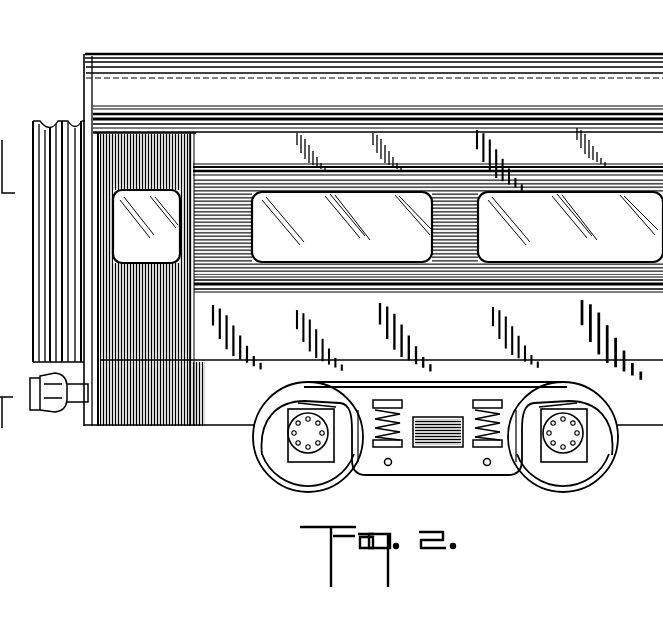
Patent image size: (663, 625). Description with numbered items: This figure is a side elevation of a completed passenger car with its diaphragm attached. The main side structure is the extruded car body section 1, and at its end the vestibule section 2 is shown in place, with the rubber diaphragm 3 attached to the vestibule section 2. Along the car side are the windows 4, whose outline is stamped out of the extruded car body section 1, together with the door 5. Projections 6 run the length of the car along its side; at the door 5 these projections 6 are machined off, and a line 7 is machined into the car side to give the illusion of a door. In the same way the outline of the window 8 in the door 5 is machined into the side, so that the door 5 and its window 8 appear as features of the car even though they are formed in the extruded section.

The extruded car body section 1 is at (581, 58).
The vestibule section 2 is at (84, 59).
The rubber diaphragm 3 is at (42, 132).
The windows 4 is at (412, 196).
The door 5 is at (160, 143).
The projections 6 is at (337, 175).
The line 7 is at (192, 164).
The window outline 8 is at (145, 202).